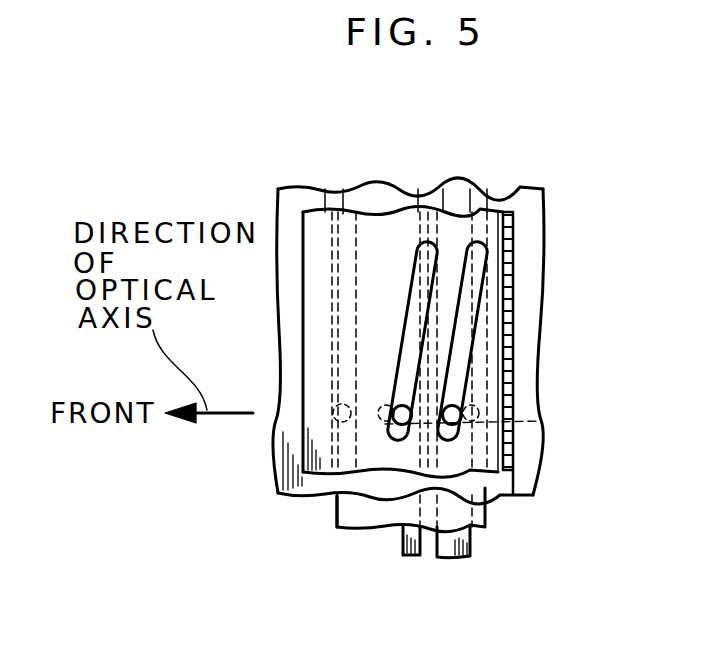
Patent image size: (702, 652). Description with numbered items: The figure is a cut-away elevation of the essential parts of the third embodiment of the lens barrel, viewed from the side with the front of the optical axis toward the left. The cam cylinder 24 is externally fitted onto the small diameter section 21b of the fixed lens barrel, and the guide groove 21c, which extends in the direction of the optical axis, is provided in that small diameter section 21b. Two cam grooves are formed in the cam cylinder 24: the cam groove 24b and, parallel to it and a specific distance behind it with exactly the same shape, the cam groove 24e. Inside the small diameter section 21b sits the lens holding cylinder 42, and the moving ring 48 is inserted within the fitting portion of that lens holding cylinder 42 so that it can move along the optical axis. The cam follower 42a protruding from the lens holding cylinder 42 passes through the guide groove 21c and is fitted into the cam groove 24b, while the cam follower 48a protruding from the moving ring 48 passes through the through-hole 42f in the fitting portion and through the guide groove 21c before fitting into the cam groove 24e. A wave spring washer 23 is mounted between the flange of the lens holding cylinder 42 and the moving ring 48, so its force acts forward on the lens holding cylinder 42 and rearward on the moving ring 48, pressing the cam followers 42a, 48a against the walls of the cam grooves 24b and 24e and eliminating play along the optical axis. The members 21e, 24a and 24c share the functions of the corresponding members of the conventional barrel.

The cam cylinder 24 is at (315, 215).
The cam cylinder member 24a is at (357, 226).
The cam groove 24b is at (417, 262).
The cam groove 24e is at (467, 270).
The cam cylinder member 24c is at (513, 378).
The through-hole 42f is at (463, 388).
The guide groove 21c is at (540, 421).
The fixed lens barrel member 21e is at (340, 478).
The small diameter section 21b is at (292, 497).
The lens holding cylinder 42 is at (353, 513).
The cam follower 42a is at (398, 442).
The wave spring washer 23 is at (420, 527).
The moving ring 48 is at (453, 556).
The cam follower 48a is at (452, 435).